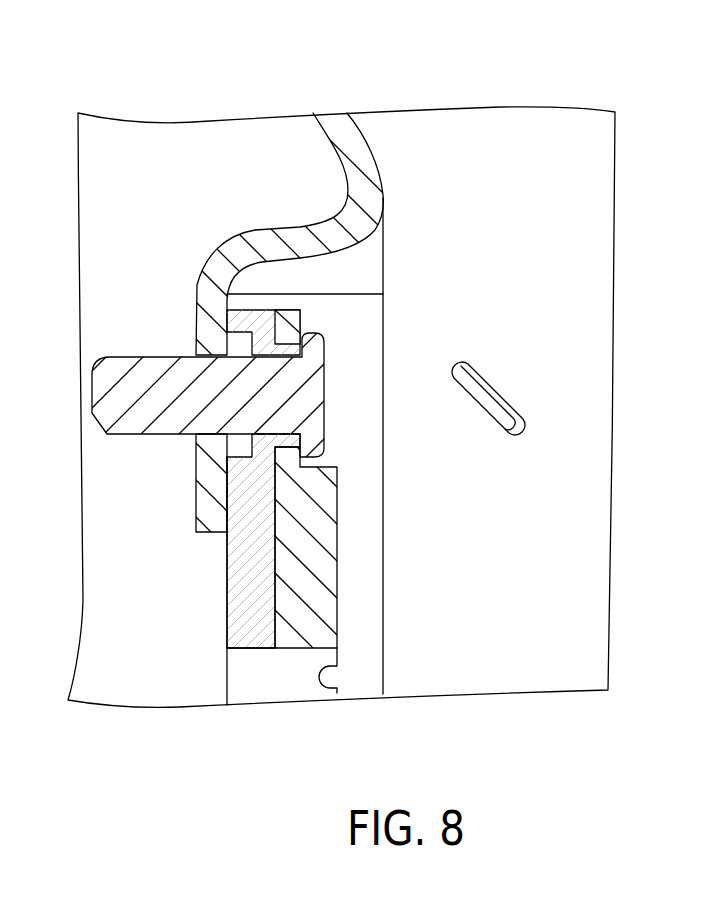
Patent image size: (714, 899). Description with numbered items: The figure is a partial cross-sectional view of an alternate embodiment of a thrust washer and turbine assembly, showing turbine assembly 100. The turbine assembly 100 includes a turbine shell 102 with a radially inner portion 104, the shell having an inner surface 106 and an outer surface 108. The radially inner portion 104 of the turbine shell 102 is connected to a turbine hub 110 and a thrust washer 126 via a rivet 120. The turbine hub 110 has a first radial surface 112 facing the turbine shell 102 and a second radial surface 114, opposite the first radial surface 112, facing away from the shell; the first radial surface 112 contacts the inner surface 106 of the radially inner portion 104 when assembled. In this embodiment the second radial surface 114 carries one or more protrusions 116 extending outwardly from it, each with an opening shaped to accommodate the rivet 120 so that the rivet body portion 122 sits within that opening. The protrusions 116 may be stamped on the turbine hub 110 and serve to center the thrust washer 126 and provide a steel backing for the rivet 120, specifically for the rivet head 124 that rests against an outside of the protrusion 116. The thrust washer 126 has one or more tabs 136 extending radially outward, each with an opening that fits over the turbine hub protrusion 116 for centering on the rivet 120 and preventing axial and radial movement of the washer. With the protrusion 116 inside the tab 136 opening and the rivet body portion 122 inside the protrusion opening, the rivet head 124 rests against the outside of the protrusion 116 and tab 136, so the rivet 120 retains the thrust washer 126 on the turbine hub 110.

The turbine assembly 100 is at (538, 100).
The turbine shell 102 is at (334, 127).
The radially inner portion 104 is at (197, 290).
The inner surface 106 is at (272, 287).
The outer surface 108 is at (222, 260).
The turbine hub 110 is at (244, 553).
The first radial surface 112 is at (227, 616).
The second radial surface 114 is at (240, 643).
The protrusion 116 is at (272, 444).
The rivet 120 is at (92, 394).
The rivet body portion 122 is at (172, 370).
The rivet head 124 is at (313, 403).
The thrust washer 126 is at (323, 576).
The tab 136 is at (302, 326).